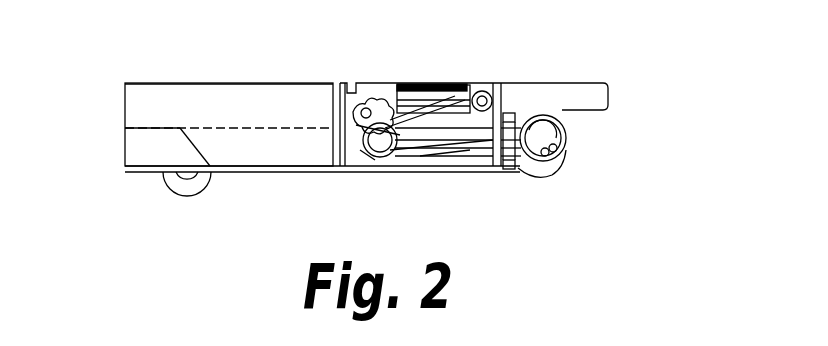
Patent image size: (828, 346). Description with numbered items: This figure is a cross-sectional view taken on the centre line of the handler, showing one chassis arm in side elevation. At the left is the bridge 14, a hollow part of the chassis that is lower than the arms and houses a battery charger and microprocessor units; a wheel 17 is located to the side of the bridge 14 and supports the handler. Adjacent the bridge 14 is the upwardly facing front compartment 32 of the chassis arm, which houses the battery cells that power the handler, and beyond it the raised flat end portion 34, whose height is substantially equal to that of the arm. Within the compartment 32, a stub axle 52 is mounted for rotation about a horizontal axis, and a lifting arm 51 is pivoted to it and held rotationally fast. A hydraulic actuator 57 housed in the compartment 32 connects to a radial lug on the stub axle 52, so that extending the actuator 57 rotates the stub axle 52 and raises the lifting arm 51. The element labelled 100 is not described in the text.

The bridge 14 is at (140, 150).
The wheel 17 is at (177, 190).
The front compartment 32 is at (270, 100).
The raised flat end portion 34 is at (535, 80).
The lifting arm 51 is at (467, 141).
The stub axle 52 is at (363, 160).
The hydraulic actuator 57 is at (462, 100).
The ring housing 100 is at (567, 137).